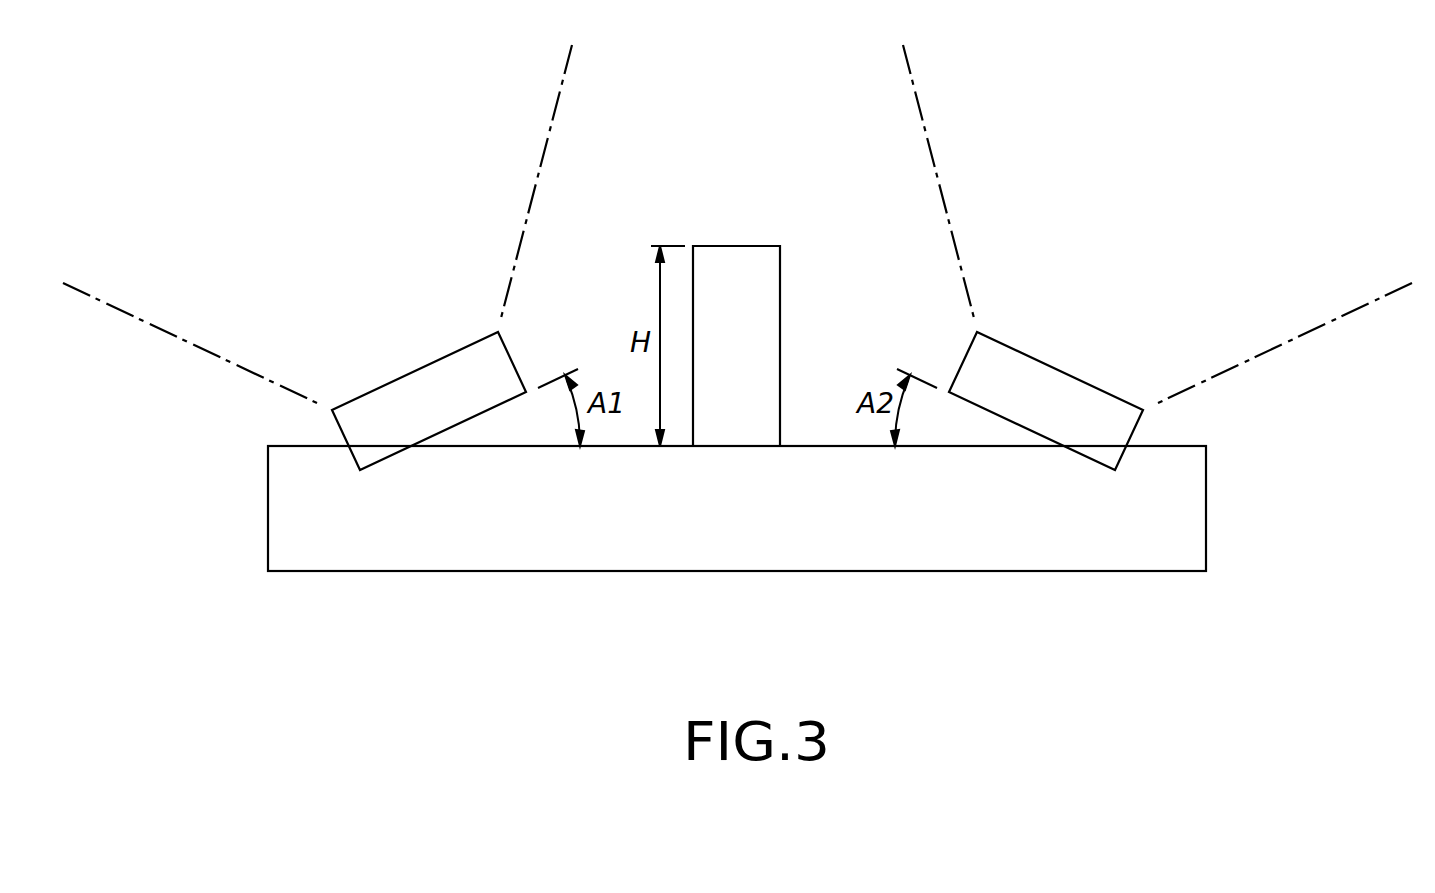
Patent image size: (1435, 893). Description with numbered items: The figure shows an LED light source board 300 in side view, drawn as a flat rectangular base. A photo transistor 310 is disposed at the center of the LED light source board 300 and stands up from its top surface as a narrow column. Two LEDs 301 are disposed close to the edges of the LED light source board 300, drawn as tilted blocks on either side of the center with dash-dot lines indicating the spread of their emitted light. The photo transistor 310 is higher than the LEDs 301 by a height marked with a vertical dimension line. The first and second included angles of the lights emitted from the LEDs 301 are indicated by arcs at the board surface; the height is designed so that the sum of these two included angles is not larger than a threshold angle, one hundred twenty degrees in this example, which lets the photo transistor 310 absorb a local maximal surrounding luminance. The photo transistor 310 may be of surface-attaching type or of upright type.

The LED light source board 300 is at (735, 515).
The LED 301 is at (435, 407).
The photo transistor 310 is at (745, 280).